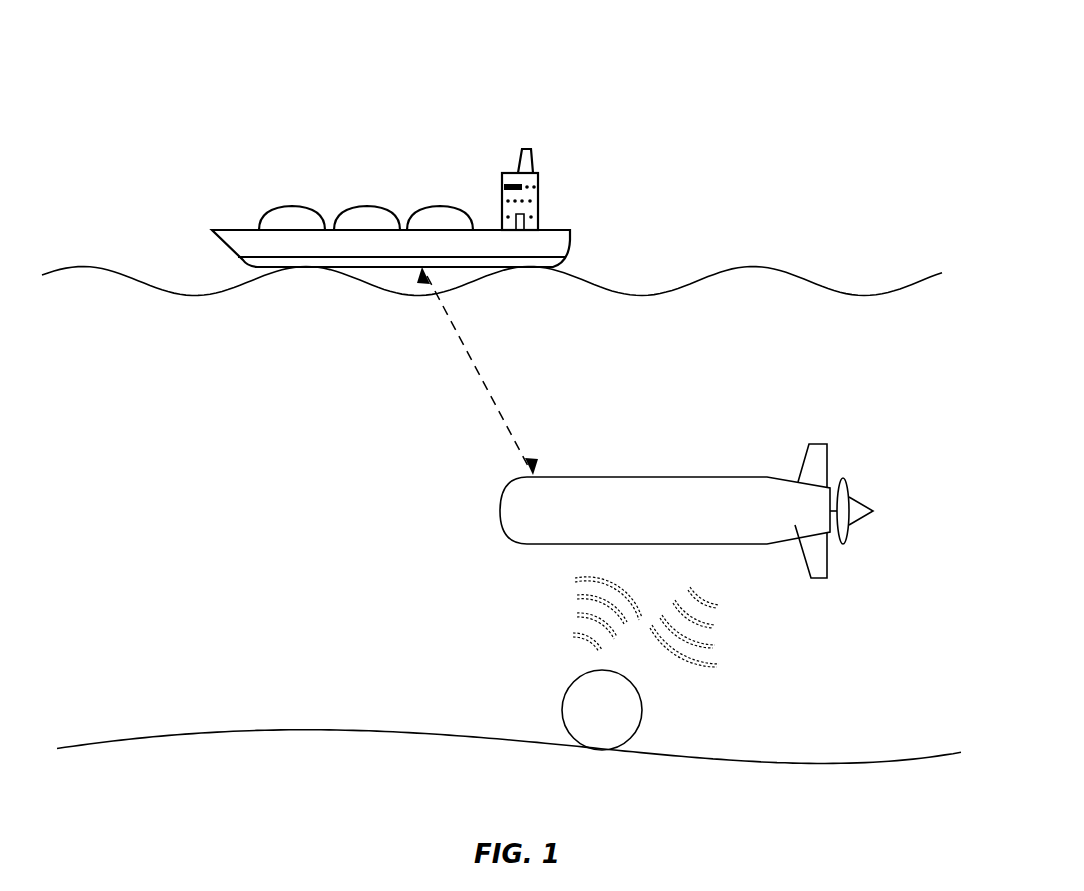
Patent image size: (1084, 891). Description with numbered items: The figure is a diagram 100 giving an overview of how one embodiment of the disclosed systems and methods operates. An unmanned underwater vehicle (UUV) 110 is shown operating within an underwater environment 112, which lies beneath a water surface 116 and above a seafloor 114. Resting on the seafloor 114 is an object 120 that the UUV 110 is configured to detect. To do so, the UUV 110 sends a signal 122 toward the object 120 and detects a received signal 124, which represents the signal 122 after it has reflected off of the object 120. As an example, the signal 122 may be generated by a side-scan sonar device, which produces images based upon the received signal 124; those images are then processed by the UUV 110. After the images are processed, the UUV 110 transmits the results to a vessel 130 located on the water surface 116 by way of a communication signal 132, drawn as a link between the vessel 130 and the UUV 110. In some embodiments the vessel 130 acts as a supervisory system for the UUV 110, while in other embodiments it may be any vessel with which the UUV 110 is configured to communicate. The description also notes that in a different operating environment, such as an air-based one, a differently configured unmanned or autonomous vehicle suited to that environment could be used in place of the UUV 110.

The diagram 100 is at (170, 93).
The unmanned underwater vehicle 110 is at (683, 476).
The underwater environment 112 is at (876, 352).
The seafloor 114 is at (875, 761).
The water surface 116 is at (786, 272).
The object 120 is at (643, 713).
The signal 122 is at (722, 638).
The received signal 124 is at (567, 608).
The vessel 130 is at (214, 240).
The communication signal 132 is at (483, 385).